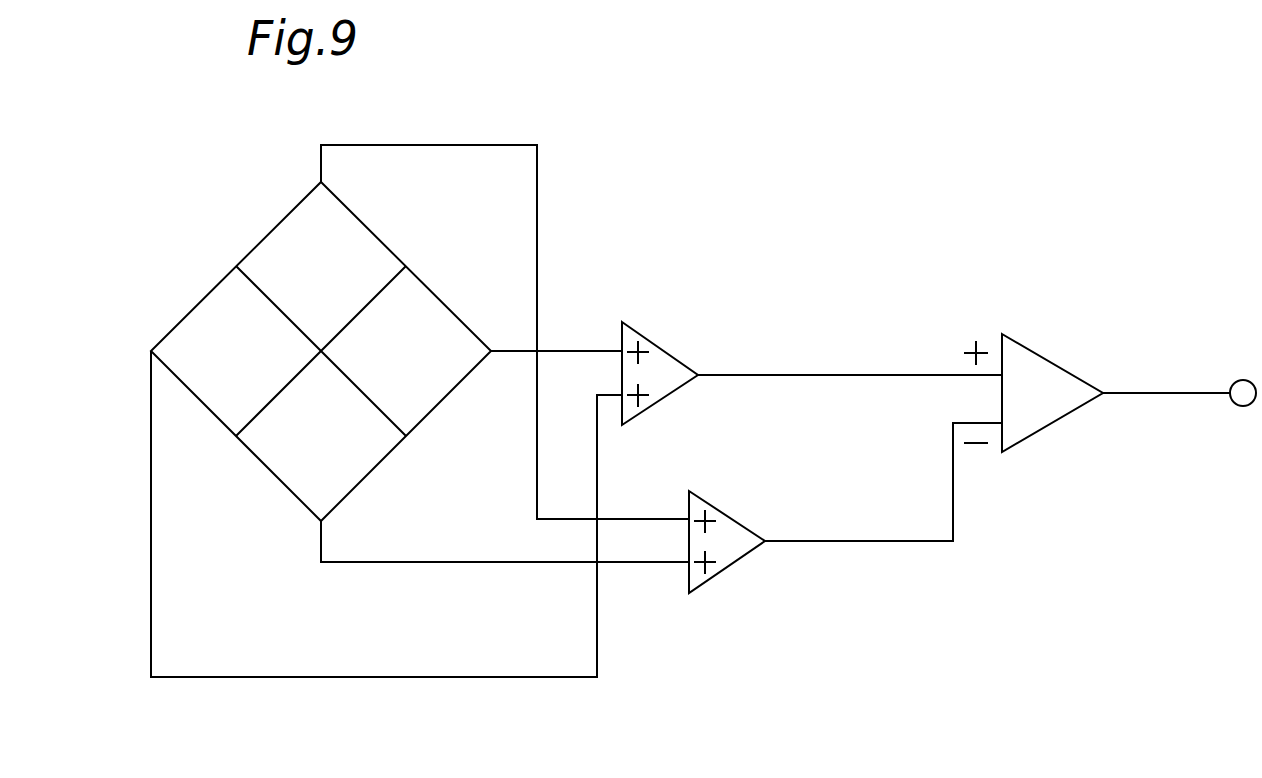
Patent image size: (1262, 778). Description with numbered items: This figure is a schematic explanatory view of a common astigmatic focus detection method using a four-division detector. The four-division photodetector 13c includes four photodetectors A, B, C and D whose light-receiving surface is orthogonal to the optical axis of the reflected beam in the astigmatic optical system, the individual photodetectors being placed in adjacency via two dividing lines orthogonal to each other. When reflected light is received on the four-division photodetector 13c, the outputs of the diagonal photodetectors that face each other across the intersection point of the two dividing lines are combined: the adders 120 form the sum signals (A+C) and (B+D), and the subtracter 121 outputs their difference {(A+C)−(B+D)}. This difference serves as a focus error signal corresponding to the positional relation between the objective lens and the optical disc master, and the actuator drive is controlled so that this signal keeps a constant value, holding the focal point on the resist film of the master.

The 4-division photodetector 13c is at (212, 231).
The adder 120 is at (668, 355).
The subtracter 121 is at (1058, 367).